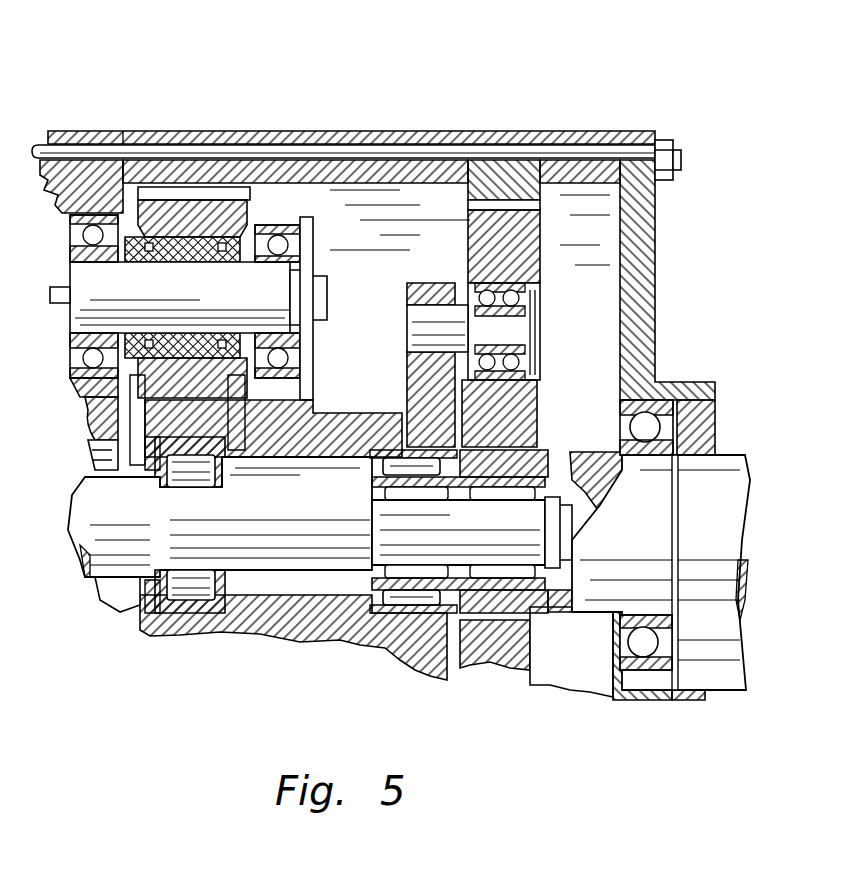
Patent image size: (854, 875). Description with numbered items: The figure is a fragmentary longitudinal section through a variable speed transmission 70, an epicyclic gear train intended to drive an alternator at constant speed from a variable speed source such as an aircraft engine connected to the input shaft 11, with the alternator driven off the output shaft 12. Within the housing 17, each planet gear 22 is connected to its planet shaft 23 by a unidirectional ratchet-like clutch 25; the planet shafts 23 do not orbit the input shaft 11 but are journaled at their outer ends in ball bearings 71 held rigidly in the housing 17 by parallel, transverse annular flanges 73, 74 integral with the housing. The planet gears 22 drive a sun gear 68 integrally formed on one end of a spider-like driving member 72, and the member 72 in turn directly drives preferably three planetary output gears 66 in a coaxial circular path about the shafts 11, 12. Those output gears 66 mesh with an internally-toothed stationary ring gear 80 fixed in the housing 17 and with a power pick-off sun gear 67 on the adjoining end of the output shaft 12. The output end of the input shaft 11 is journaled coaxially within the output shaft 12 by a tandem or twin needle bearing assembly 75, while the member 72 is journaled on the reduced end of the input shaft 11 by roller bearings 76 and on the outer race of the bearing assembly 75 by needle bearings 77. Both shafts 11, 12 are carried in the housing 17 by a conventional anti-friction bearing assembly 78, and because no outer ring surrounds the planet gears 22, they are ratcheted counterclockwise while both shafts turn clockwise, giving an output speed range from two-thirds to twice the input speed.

The variable speed transmission 70 is at (212, 84).
The housing 17 is at (380, 126).
The stationary ring gear 80 is at (519, 135).
The annular flange 73 is at (47, 197).
The ball bearings 71 is at (68, 236).
The planet gears 22 is at (176, 224).
The unidirectional ratchet-like clutches 25 is at (180, 256).
The planet shafts 23 is at (158, 286).
The planetary output gears 66 is at (540, 264).
The annular flange 74 is at (313, 393).
The needle bearings 77 is at (396, 455).
The sun gear 68 is at (203, 408).
The spider-like driving member 72 is at (292, 446).
The power pick-off sun gear 67 is at (540, 464).
The anti-friction bearing assembly 78 is at (627, 424).
The input shaft 11 is at (100, 508).
The roller bearings 76 is at (190, 488).
The twin needle bearing assembly 75 is at (500, 502).
The output shaft 12 is at (696, 496).